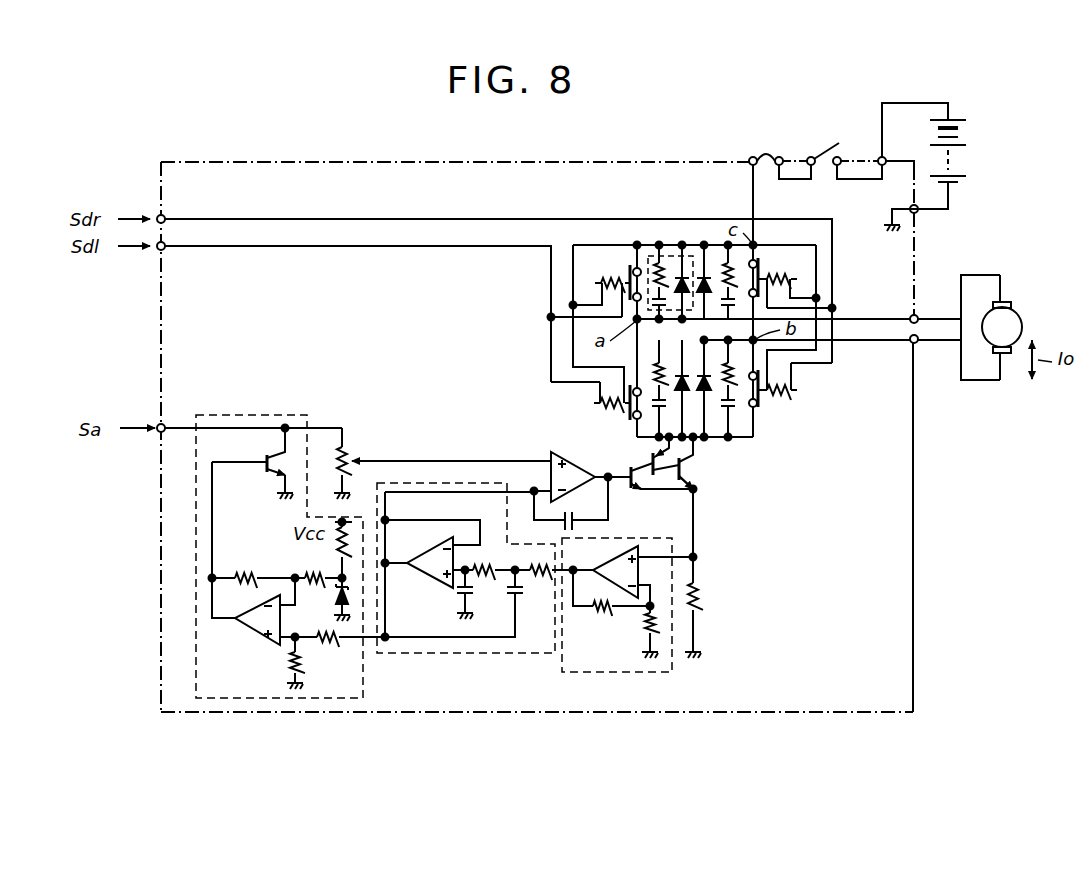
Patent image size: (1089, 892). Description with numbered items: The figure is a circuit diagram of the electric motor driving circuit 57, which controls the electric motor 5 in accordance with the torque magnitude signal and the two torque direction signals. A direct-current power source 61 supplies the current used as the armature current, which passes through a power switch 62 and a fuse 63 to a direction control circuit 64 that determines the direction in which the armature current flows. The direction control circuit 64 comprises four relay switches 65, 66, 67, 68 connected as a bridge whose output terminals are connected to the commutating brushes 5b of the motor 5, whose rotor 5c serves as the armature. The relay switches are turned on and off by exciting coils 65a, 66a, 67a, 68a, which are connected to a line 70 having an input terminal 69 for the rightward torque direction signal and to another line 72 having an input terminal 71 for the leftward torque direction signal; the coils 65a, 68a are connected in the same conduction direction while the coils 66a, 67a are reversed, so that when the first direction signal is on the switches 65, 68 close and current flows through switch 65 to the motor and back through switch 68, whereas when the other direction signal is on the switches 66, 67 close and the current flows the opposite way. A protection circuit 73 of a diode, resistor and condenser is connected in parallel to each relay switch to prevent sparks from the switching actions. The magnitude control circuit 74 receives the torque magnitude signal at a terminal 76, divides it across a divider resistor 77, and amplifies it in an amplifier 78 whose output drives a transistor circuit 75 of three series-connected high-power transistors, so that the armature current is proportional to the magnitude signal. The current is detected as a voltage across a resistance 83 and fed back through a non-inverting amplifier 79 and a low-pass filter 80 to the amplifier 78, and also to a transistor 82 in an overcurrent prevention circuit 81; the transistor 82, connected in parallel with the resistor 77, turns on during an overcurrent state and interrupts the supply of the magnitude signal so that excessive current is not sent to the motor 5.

The electric motor driving circuit 57 is at (517, 160).
The input terminal 69 is at (167, 215).
The input terminal 71 is at (165, 250).
The line 70 is at (480, 216).
The line 72 is at (457, 249).
The direction control circuit 64 is at (696, 243).
The protection circuit 73 is at (653, 258).
The relay switch 65 is at (626, 268).
The exciting coil 65a is at (598, 280).
The relay switch 66 is at (620, 418).
The exciting coil 66a is at (597, 402).
The relay switch 67 is at (764, 262).
The exciting coil 67a is at (793, 280).
The relay switch 68 is at (758, 408).
The exciting coil 68a is at (790, 396).
The fuse 63 is at (757, 157).
The power switch 62 is at (813, 152).
The direct-current power source 61 is at (953, 164).
The electric motor 5 is at (989, 323).
The commutating brush 5b is at (1006, 302).
The rotor 5c is at (1018, 325).
The magnitude control circuit 74 is at (436, 440).
The transistor circuit 75 is at (698, 474).
The terminal 76 is at (163, 424).
The divider resistor 77 is at (348, 455).
The amplifier 78 is at (589, 466).
The non-inverting amplifier 79 is at (610, 672).
The low-pass filter 80 is at (473, 656).
The overcurrent prevention circuit 81 is at (248, 556).
The transistor 82 is at (264, 468).
The resistance 83 is at (700, 596).